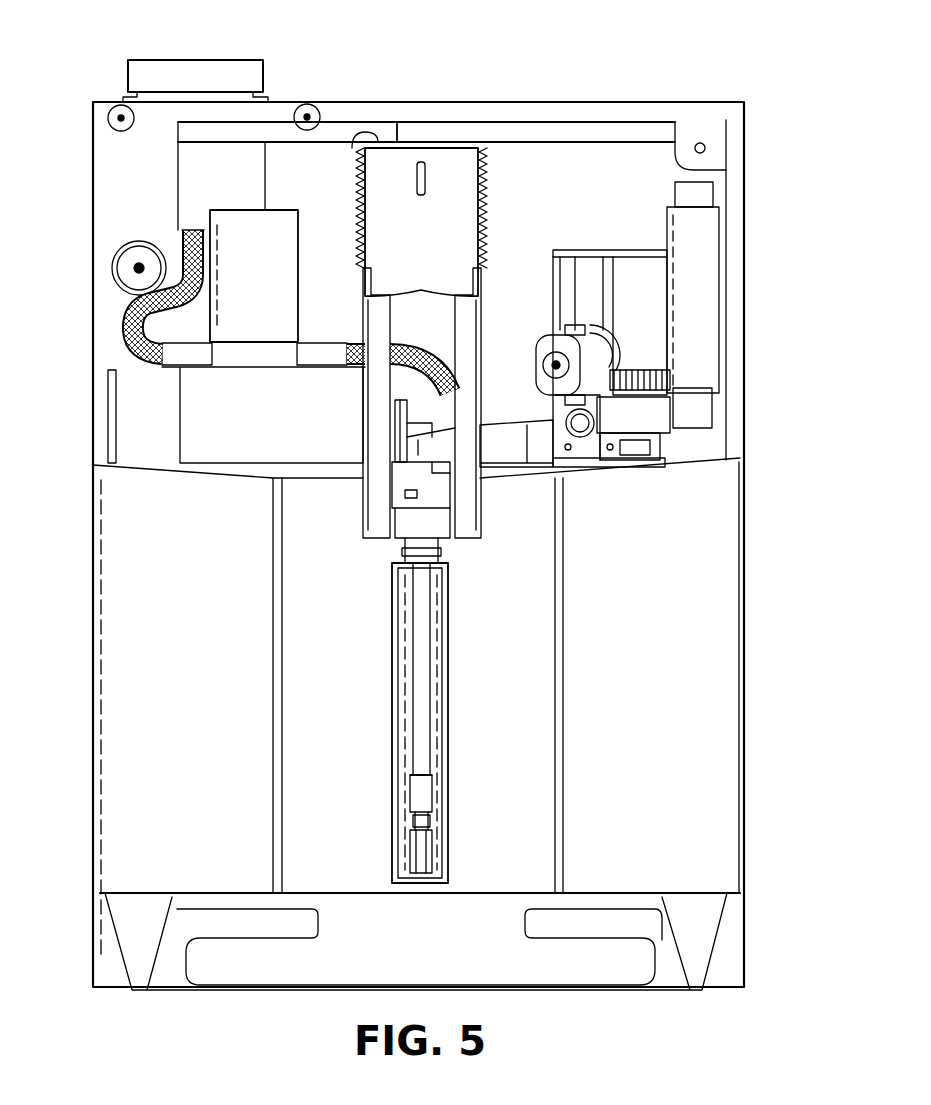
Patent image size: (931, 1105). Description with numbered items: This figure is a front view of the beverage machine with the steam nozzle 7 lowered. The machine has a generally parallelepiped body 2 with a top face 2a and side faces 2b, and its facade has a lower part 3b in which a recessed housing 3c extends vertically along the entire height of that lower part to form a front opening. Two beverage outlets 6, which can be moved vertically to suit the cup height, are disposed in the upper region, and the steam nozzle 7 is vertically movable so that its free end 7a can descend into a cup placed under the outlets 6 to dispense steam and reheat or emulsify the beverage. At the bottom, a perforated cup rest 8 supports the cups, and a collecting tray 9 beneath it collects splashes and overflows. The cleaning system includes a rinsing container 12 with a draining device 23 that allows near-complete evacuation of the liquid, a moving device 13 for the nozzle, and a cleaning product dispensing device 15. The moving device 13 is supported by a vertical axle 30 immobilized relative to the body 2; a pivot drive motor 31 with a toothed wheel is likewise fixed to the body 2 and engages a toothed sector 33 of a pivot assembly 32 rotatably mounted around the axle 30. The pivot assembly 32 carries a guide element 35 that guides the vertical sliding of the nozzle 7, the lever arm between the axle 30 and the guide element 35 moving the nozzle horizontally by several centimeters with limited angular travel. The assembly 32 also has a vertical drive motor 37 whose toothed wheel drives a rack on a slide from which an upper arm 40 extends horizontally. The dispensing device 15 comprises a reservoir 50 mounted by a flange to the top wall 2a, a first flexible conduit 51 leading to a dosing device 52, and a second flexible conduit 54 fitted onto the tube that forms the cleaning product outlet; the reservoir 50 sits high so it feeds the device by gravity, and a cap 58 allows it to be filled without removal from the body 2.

The body 2 is at (716, 112).
The top face 2a is at (431, 101).
The side faces 2b is at (93, 637).
The lower part of the facade 3b is at (203, 592).
The recessed housing 3c is at (391, 716).
The outlets 6 is at (375, 533).
The steam nozzle 7 is at (425, 642).
The free end 7a is at (430, 824).
The cup rest 8 is at (705, 893).
The collecting tray 9 is at (705, 928).
The rinsing container 12 is at (432, 750).
The moving device 13 is at (612, 193).
The cleaning product dispensing device 15 is at (327, 178).
The draining device 23 is at (418, 852).
The vertical axle 30 is at (702, 413).
The pivot drive motor 31 is at (630, 422).
The pivot assembly 32 is at (650, 335).
The toothed sector 33 is at (602, 375).
The guide element 35 is at (407, 518).
The vertical drive motor 37 is at (541, 358).
The upper arm 40 is at (500, 448).
The reservoir 50 is at (243, 170).
The first flexible conduit 51 is at (122, 327).
The dosing device 52 is at (265, 240).
The second flexible conduit 54 is at (352, 342).
The cap 58 is at (205, 78).